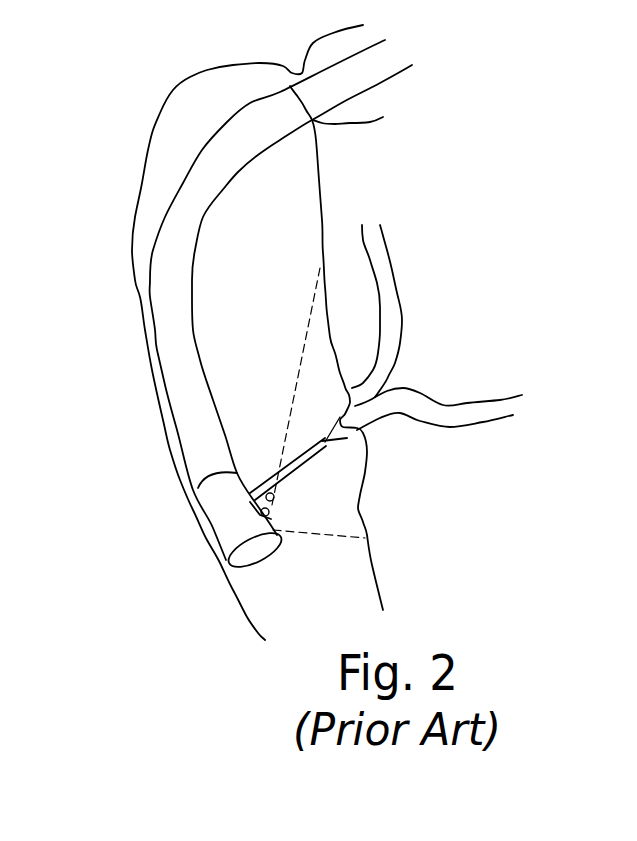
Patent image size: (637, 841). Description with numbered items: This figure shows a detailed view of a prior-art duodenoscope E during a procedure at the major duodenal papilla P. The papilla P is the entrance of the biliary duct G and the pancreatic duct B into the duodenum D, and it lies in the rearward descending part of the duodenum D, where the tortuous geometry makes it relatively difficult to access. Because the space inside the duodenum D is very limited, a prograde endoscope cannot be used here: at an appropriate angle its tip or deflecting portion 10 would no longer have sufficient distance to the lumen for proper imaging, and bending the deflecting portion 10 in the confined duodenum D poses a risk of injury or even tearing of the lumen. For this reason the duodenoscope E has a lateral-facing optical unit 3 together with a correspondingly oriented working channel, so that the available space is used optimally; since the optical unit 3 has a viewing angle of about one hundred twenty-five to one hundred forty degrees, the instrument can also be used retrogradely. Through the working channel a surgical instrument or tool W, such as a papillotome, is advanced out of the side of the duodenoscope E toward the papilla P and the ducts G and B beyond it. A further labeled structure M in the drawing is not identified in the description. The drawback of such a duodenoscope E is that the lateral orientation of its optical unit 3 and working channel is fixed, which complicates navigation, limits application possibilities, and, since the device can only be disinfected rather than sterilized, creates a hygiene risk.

The duodenum D is at (163, 152).
The deflecting portion 10 is at (173, 248).
The duodenoscope E is at (203, 450).
The optical unit 3 is at (263, 421).
The surgical instrument or tool W is at (302, 463).
The major duodenal papilla P is at (378, 396).
The pylorus wall M is at (360, 108).
The biliary duct G is at (388, 303).
The pancreatic duct B is at (503, 408).